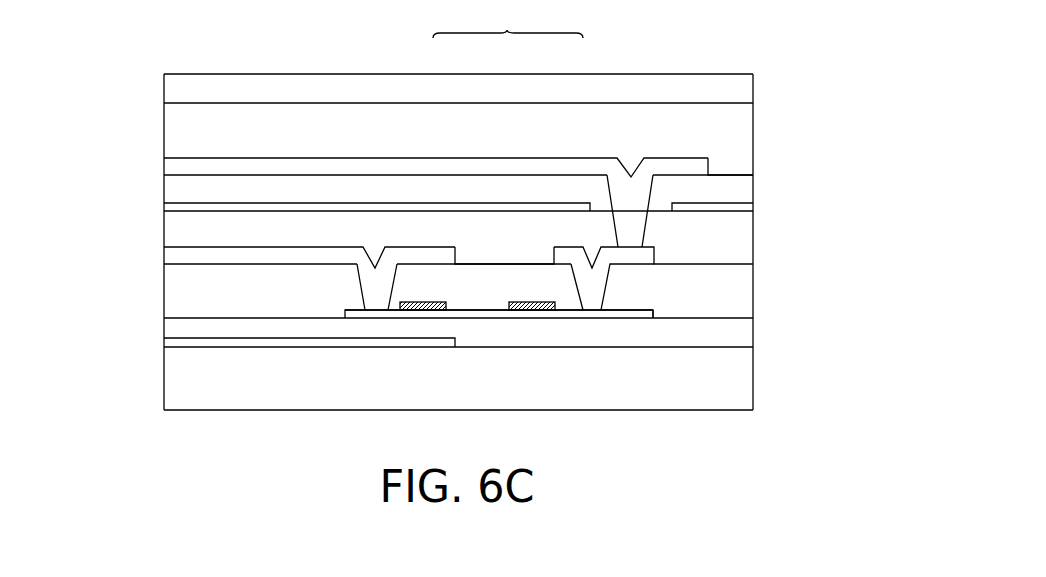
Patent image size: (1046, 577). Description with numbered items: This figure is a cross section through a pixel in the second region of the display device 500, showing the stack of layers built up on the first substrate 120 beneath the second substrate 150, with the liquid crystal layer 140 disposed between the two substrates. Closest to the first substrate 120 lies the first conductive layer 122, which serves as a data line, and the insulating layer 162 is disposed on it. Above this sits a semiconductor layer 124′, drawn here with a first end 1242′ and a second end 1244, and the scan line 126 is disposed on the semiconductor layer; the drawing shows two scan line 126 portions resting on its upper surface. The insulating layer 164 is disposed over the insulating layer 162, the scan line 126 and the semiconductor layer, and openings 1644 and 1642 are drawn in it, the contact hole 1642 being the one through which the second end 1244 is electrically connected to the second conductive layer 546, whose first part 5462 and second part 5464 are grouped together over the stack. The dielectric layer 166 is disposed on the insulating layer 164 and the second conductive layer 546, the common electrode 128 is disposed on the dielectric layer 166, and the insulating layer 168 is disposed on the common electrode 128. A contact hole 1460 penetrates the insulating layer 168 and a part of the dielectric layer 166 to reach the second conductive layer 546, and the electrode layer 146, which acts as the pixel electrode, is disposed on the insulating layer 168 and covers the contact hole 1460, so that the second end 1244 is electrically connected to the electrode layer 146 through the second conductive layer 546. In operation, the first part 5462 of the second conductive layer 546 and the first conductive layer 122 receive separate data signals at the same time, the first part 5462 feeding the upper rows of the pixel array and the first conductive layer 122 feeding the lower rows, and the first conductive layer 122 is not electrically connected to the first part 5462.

The display device 500 is at (44, 28).
The second substrate 150 is at (173, 93).
The liquid crystal layer 140 is at (163, 133).
The electrode layer 146 is at (173, 165).
The contact hole 1460 is at (662, 186).
The insulating layer 168 is at (173, 190).
The common electrode 128 is at (172, 208).
The dielectric layer 166 is at (178, 238).
The insulating layer 164 is at (173, 302).
The first portion of layer 164 (source) 1644 is at (352, 296).
The contact hole 1642 is at (618, 290).
The insulating layer 162 is at (172, 330).
The first conductive layer 122 is at (172, 343).
The first substrate 120 is at (182, 375).
The scan line 126 is at (447, 306).
The second end 1244 is at (655, 313).
The gate structure 124′ is at (645, 311).
The gate layer portion 1242′ is at (375, 321).
The second conductive layer 546 is at (508, 22).
The first part 5462 is at (435, 256).
The second contact opening 5464 is at (614, 256).